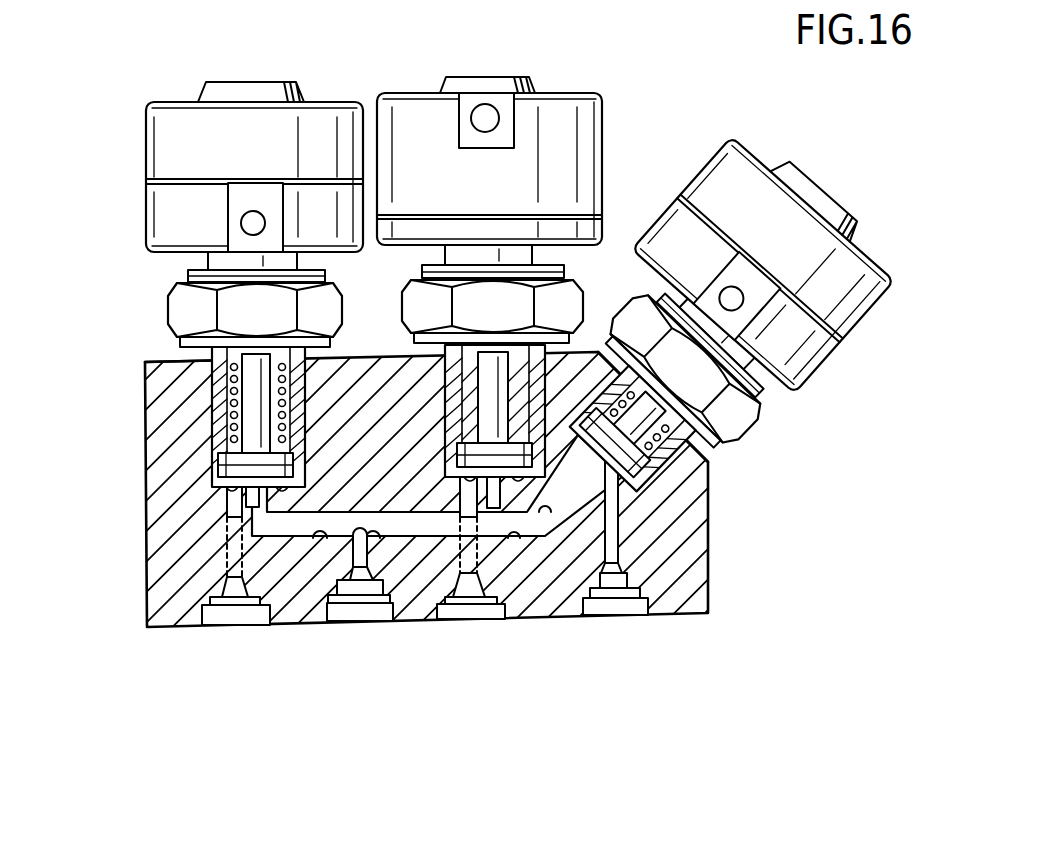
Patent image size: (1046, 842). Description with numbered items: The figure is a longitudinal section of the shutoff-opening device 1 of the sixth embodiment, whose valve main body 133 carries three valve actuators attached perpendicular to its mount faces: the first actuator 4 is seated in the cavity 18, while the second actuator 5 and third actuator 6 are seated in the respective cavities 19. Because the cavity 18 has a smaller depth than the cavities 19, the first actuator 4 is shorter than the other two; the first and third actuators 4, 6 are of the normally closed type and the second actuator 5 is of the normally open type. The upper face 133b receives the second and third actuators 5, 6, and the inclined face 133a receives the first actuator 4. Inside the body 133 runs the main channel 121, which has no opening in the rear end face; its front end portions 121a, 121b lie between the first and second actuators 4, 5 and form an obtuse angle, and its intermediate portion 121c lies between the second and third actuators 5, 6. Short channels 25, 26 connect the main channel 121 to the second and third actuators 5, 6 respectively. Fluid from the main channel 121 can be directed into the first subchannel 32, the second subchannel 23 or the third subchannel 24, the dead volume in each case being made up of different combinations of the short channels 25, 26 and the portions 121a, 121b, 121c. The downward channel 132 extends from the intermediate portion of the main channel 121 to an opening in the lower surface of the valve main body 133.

The solenoid valve manifold assembly 1 is at (665, 115).
The first actuator 4 is at (760, 178).
The second actuator 5 is at (563, 105).
The third actuator 6 is at (332, 104).
The cavities 19 is at (215, 398).
The valve main body 133 is at (172, 470).
The inclined mounting surface of block 133a is at (705, 452).
The top mounting surface of block 133b is at (165, 358).
The cavity 18 is at (618, 543).
The first subchannel 32 is at (623, 548).
The third subchannel 24 is at (205, 583).
The short channel 26 is at (260, 518).
The second subchannel 23 is at (445, 570).
The short channel 25 is at (514, 538).
The main channel 121 is at (373, 540).
The front end portion of the main channel 121a is at (545, 516).
The front end portion of the main channel 121b is at (495, 512).
The intermediate portion of the main channel 121c is at (322, 543).
The downward channel 132 is at (352, 622).